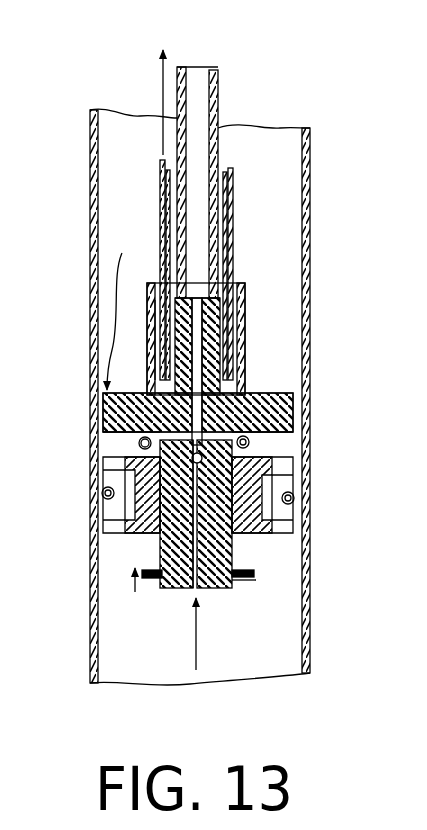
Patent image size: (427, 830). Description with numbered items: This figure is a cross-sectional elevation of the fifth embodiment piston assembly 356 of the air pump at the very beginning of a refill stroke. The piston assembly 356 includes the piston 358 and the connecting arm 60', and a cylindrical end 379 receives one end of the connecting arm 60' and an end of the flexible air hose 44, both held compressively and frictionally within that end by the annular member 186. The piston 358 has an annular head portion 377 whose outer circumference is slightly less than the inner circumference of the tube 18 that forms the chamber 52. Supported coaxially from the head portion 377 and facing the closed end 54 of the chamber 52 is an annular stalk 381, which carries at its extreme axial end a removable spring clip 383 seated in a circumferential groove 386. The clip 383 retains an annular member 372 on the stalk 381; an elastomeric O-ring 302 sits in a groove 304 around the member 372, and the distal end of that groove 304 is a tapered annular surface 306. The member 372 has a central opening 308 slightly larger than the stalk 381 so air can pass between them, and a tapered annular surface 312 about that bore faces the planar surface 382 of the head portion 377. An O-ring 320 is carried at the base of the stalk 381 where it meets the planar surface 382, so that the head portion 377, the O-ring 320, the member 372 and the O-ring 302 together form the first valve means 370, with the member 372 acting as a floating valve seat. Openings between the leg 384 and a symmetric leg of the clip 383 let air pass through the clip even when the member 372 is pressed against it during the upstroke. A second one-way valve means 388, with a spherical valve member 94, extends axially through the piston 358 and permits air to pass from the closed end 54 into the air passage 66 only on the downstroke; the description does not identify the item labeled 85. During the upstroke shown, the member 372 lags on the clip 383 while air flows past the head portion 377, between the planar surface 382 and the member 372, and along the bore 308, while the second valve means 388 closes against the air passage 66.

The tube 18 is at (90, 212).
The flexible air hose 44 is at (160, 175).
The chamber 52 is at (153, 660).
The closed end of the chamber 54 is at (124, 685).
The connecting arm 60' is at (225, 275).
The air passage 66 is at (200, 97).
The flow path 85 is at (139, 596).
The spherical valve member 94 is at (252, 446).
The annular member 186 is at (160, 325).
The O-ring 302 is at (293, 505).
The groove 304 is at (103, 535).
The tapered annular surface 306 is at (103, 489).
The central opening 308 is at (155, 535).
The tapered annular surface 312 is at (262, 395).
The O-ring 320 is at (138, 441).
The piston assembly 356 is at (276, 290).
The piston 358 is at (280, 389).
The first valve means 370 is at (295, 415).
The annular member 372 is at (270, 484).
The head portion 377 is at (112, 412).
The cylindrical end 379 is at (245, 302).
The stalk 381 is at (215, 548).
The planar surface 382 is at (140, 452).
The spring clip 383 is at (254, 574).
The leg 384 is at (243, 580).
The circumferential groove 386 is at (215, 590).
The second one-way valve means 388 is at (100, 395).